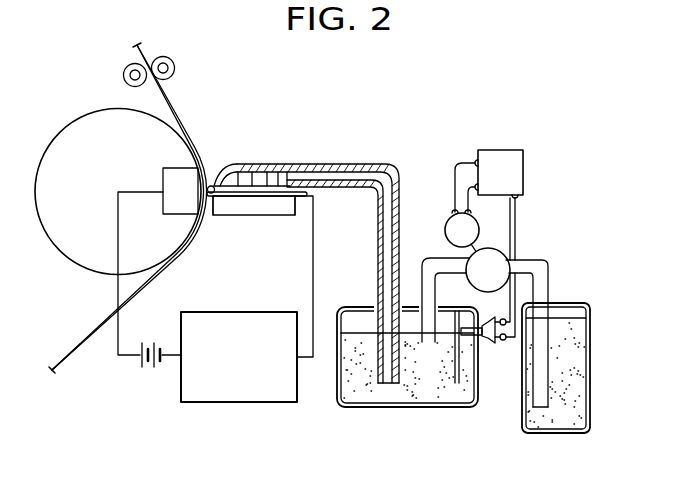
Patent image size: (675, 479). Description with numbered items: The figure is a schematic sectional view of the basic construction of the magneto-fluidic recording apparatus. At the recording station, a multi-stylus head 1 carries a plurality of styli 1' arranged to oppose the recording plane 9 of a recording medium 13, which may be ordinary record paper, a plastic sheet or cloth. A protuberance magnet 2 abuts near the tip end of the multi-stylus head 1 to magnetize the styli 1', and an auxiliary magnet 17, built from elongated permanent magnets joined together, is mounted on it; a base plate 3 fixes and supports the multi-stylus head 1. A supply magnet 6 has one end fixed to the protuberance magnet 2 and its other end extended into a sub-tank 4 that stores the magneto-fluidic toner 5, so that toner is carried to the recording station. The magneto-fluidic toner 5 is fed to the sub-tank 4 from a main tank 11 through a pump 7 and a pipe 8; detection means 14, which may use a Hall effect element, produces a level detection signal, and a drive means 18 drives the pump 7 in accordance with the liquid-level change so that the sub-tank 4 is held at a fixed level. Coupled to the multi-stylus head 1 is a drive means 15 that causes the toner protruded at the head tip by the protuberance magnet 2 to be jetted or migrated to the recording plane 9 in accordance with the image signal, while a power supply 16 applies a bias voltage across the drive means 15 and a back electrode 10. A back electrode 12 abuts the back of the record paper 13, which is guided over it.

The multi-stylus head 1 is at (243, 225).
The styli 1' is at (254, 226).
The protuberance magnet 2 is at (300, 118).
The base plate 3 is at (280, 212).
The sub-tank 4 is at (420, 408).
The magneto-fluidic toner 5 is at (365, 395).
The supply magnet 6 is at (372, 168).
The pump 7 is at (509, 256).
The pipe 8 is at (428, 258).
The recording plane 9 is at (95, 333).
The back electrode 10 is at (180, 177).
The main tank 11 is at (565, 304).
The back electrode 12 is at (62, 248).
The recording medium 13 is at (68, 358).
The detection means 14 is at (492, 345).
The drive means 15 is at (238, 404).
The power supply 16 is at (147, 368).
The auxiliary magnet 17 is at (240, 170).
The drive means 18 is at (510, 152).